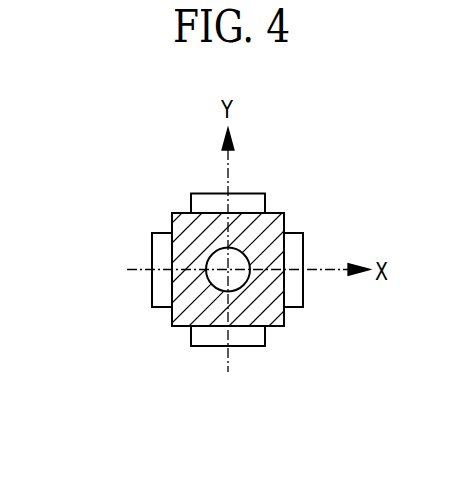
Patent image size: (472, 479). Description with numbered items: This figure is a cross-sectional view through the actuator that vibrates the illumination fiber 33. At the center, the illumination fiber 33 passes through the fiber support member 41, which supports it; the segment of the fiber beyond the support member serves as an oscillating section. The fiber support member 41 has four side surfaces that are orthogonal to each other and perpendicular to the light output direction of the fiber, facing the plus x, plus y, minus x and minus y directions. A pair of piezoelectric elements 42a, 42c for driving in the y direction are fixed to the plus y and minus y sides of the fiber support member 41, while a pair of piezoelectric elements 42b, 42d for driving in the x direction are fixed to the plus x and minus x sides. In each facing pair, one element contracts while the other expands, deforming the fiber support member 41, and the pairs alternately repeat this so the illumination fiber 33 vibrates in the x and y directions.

The illumination fiber 33 is at (218, 262).
The fiber support member 41 is at (285, 220).
The piezoelectric element 42a is at (247, 194).
The piezoelectric element 42b is at (303, 290).
The piezoelectric element 42c is at (207, 346).
The piezoelectric element 42d is at (152, 245).